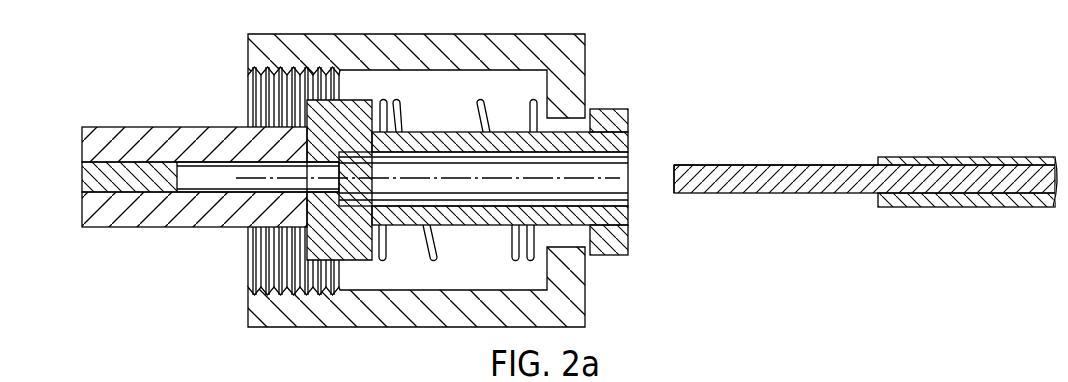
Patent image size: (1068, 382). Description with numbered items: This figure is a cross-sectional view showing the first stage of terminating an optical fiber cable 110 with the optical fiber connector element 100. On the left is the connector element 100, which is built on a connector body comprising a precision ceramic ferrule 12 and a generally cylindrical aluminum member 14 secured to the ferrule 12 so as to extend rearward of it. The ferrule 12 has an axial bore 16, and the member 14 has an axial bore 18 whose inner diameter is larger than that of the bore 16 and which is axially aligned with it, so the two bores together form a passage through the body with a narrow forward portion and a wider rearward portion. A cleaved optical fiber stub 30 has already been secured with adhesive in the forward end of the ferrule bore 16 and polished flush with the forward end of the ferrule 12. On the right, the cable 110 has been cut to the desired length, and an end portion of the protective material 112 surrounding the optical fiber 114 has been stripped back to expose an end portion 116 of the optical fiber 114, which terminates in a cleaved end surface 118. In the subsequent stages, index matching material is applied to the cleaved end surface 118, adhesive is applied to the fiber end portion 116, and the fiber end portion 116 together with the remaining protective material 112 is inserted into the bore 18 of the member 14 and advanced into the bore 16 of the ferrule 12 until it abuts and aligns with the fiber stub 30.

The optical fiber connector element 100 is at (560, 31).
The ferrule 12 is at (153, 127).
The fiber stub 30 is at (81, 177).
The axial bore 16 is at (213, 182).
The axial bore 18 is at (618, 178).
The cylindrical aluminum member 14 is at (610, 113).
The optical fiber cable 110 is at (859, 175).
The protective material 112 is at (950, 206).
The optical fiber 114 is at (828, 196).
The end portion of the optical fiber 116 is at (788, 165).
The cleaved end surface 118 is at (674, 178).